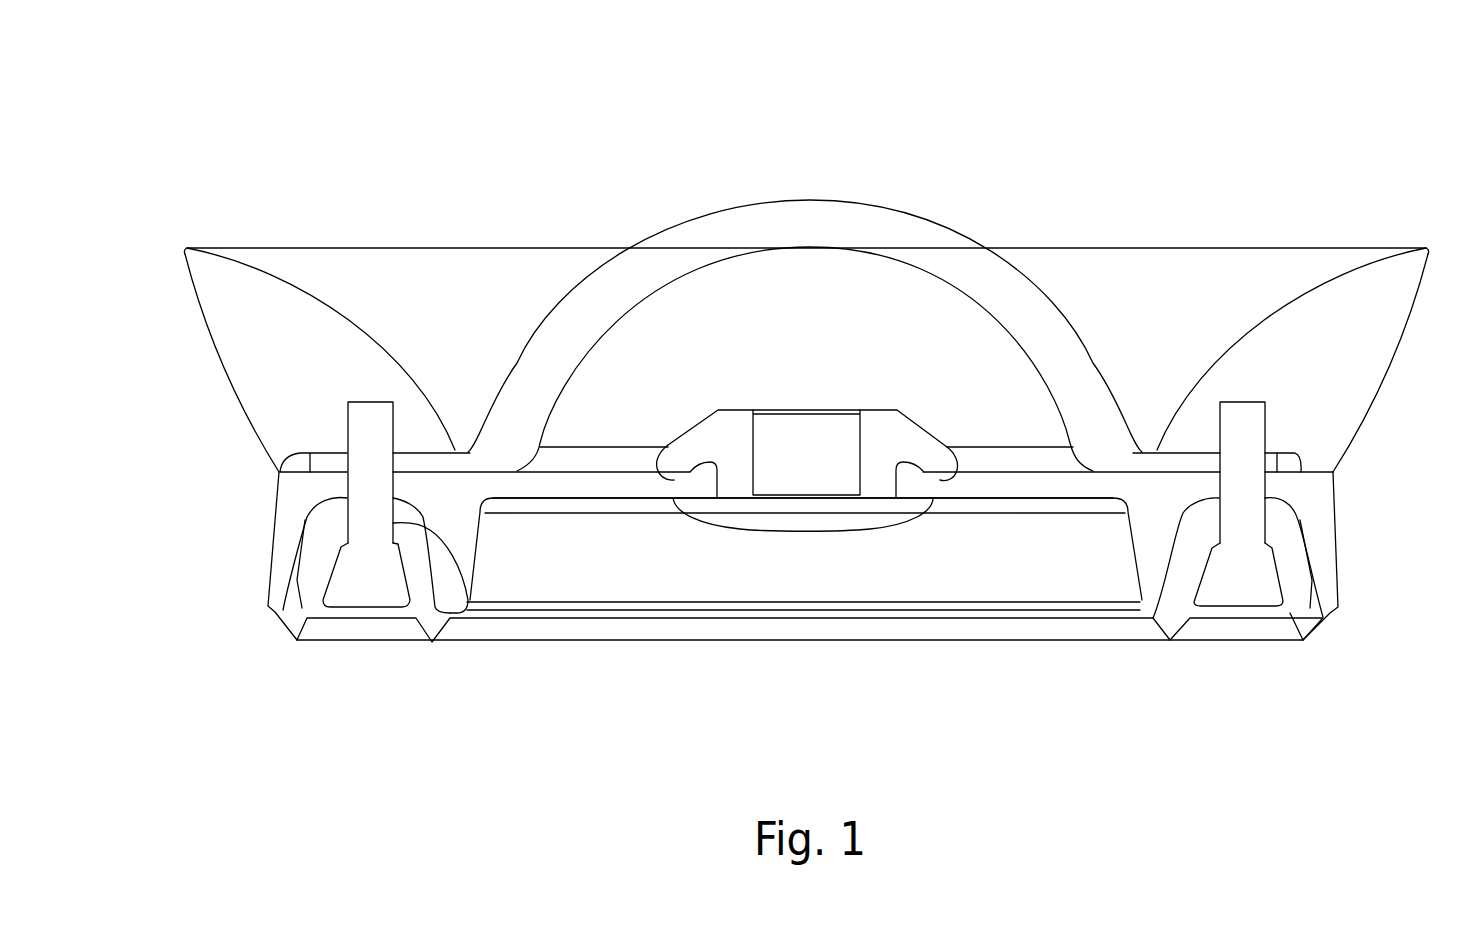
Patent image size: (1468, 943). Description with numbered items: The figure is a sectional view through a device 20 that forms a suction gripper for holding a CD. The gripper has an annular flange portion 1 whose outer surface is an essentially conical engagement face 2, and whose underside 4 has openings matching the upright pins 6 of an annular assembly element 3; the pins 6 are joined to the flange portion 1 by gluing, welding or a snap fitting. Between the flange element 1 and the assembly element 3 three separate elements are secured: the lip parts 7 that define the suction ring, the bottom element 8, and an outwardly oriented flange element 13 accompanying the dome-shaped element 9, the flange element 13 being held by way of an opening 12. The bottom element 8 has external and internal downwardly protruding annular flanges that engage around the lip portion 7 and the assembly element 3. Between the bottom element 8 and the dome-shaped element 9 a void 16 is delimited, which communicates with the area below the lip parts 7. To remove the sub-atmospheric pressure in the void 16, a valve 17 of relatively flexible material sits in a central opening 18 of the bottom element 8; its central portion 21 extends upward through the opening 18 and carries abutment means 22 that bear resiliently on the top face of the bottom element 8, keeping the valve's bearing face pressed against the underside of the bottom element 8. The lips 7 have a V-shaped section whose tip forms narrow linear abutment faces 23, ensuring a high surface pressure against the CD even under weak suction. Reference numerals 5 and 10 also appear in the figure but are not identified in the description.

The annular flange portion 1 is at (274, 304).
The engagement face 2 is at (226, 370).
The assembly element 3 is at (1222, 580).
The underside of the flange portion 4 is at (280, 472).
The connection post 5 is at (348, 418).
The upright pins 6 is at (347, 477).
The lip parts 7 is at (297, 605).
The bottom element 8 is at (283, 562).
The dome-shaped element 9 is at (985, 275).
The post foot 10 is at (478, 600).
The opening 12 is at (1175, 463).
The flange element 13 is at (1163, 462).
The void 16 is at (832, 304).
The valve 17 is at (820, 425).
The central opening 18 is at (920, 450).
The device 20 is at (827, 167).
The central portion 21 is at (733, 465).
The abutment means 22 is at (700, 445).
The abutment faces 23 is at (1302, 641).